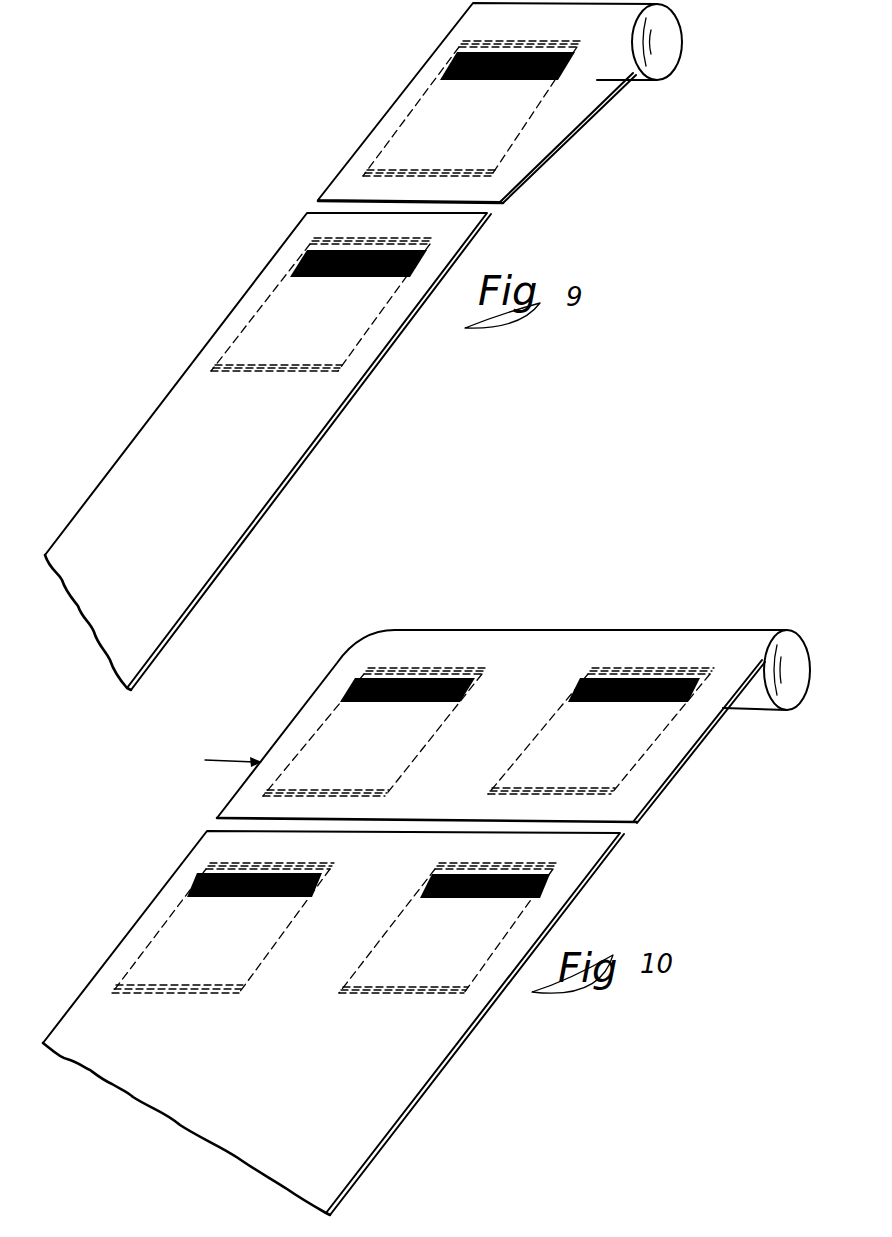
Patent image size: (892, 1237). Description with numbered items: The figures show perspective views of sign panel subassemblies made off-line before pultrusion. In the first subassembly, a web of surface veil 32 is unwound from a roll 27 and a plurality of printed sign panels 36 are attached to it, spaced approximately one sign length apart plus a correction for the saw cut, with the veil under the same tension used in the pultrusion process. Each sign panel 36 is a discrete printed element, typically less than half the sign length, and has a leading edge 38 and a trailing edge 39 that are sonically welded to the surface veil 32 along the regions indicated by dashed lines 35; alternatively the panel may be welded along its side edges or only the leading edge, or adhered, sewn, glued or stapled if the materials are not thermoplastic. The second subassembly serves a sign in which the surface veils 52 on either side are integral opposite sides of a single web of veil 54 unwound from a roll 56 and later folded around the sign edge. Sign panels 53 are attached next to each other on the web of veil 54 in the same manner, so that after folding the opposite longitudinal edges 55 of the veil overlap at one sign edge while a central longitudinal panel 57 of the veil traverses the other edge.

In FIG. 9, the roll 27 is at (660, 42).
In FIG. 9, the surface veil 32 is at (428, 63).
In FIG. 9, the dashed lines 35 is at (592, 77).
In FIG. 10, the dashed lines 35 is at (473, 633).
In FIG. 9, the sign panel 36 is at (560, 125).
In FIG. 9, the leading edge 38 is at (517, 187).
In FIG. 10, the leading edge 38 is at (232, 806).
In FIG. 9, the trailing edge 39 is at (450, 20).
In FIG. 10, the trailing edge 39 is at (420, 664).
In FIG. 10, the surface veil 52 is at (97, 1067).
In FIG. 10, the sign panel 53 is at (330, 702).
In FIG. 10, the web of veil 54 is at (228, 749).
In FIG. 10, the longitudinal edge 55 is at (193, 875).
In FIG. 10, the roll 56 is at (788, 650).
In FIG. 10, the central longitudinal panel 57 is at (550, 643).